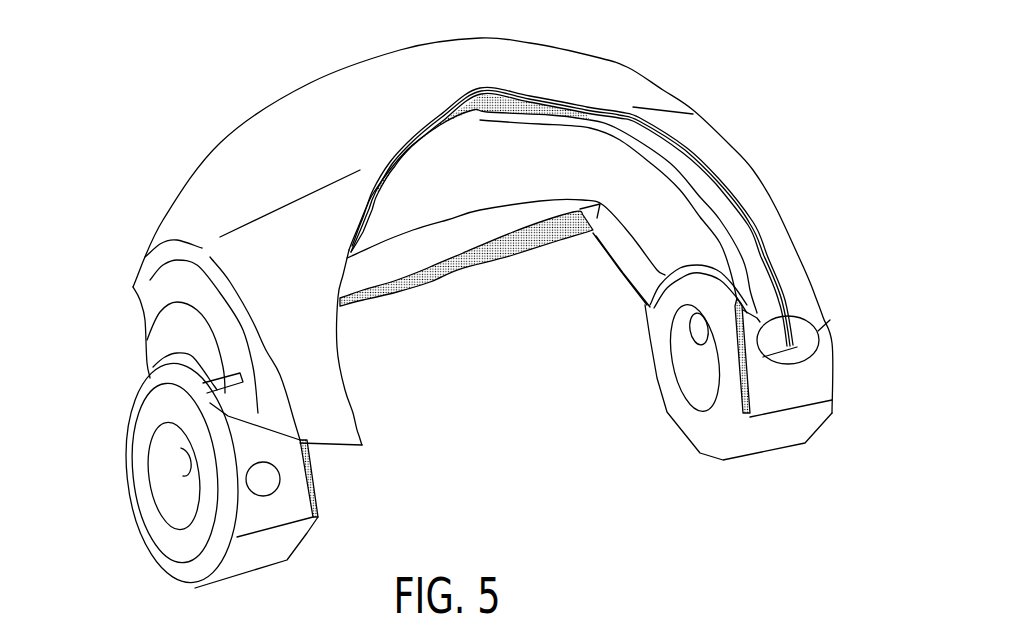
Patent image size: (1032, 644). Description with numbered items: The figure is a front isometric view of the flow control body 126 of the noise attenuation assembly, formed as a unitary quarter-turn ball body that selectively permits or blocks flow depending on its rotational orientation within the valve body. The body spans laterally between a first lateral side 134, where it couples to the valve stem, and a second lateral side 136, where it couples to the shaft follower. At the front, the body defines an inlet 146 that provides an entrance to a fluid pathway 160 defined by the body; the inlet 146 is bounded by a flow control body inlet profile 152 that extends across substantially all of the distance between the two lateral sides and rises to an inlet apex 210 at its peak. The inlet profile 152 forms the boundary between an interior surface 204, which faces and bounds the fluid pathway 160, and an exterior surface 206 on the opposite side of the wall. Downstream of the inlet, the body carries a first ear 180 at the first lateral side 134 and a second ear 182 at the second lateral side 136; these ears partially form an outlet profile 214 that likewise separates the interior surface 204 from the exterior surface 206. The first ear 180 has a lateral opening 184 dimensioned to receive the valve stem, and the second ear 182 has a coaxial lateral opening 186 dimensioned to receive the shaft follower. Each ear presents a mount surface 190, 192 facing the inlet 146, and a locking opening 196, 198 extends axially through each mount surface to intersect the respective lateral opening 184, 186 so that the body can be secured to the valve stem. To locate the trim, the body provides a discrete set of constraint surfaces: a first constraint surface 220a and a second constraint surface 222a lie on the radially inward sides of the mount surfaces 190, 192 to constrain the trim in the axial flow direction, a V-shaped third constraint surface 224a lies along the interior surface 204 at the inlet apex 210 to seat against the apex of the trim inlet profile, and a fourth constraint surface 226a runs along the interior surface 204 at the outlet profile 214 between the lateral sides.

The flow control body 126 is at (222, 143).
The first lateral side 134 is at (758, 86).
The second lateral side 136 is at (110, 353).
The inlet 146 is at (343, 344).
The flow control body inlet profile 152 is at (760, 232).
The fluid pathway 160 is at (560, 423).
The first ear 180 is at (834, 382).
The second ear 182 is at (284, 550).
The lateral opening 184 is at (692, 358).
The lateral opening 186 is at (176, 484).
The mount surface 190 is at (817, 402).
The mount surface 192 is at (290, 515).
The locking opening 196 is at (804, 349).
The locking opening 198 is at (276, 474).
The interior surface 204 is at (473, 187).
The exterior surface 206 is at (350, 87).
The inlet apex 210 is at (484, 86).
The outlet profile 214 is at (388, 294).
The first constraint surface 220a is at (755, 397).
The second constraint surface 222a is at (315, 490).
The third constraint surface 224a is at (493, 100).
The fourth constraint surface 226a is at (488, 256).